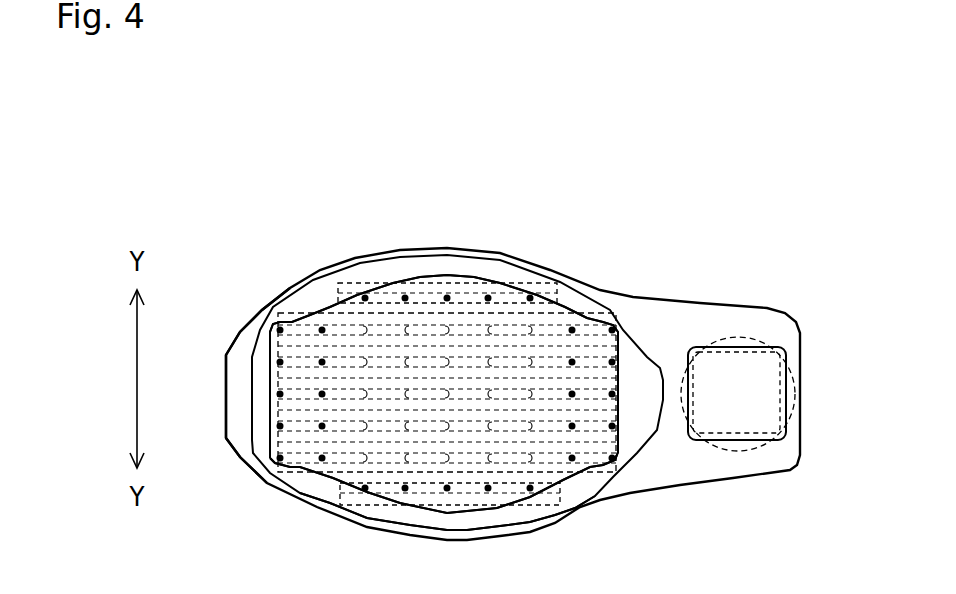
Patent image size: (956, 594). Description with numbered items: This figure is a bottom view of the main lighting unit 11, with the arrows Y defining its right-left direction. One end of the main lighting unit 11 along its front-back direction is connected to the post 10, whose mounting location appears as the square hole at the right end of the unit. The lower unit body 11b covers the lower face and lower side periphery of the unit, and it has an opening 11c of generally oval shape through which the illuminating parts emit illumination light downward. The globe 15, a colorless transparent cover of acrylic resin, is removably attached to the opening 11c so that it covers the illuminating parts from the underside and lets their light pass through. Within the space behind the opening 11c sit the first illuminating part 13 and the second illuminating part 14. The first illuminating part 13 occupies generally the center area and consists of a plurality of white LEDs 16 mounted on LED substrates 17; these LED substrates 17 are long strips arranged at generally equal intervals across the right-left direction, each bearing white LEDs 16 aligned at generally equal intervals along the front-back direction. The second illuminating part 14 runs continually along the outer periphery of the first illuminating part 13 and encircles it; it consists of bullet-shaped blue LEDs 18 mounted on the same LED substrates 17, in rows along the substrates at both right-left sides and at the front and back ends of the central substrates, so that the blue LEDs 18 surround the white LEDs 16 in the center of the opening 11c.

The post 10 is at (763, 448).
The main lighting unit 11 is at (625, 240).
The lower unit body 11b is at (238, 458).
The opening 11c is at (503, 521).
The first illuminating part 13 is at (316, 297).
The second illuminating part 14 is at (444, 394).
The globe 15 is at (428, 515).
The white LEDs 16 is at (365, 428).
The LED substrates 17 is at (282, 378).
The blue LEDs 18 is at (480, 295).